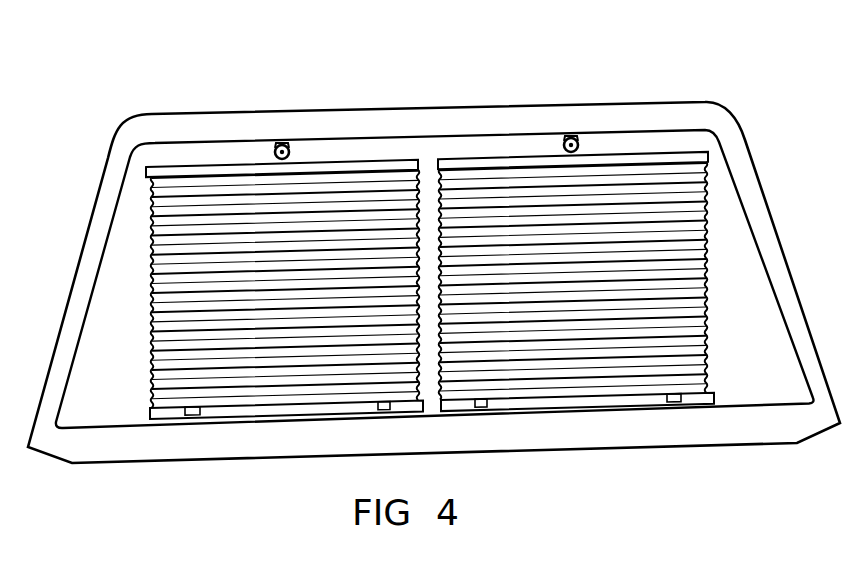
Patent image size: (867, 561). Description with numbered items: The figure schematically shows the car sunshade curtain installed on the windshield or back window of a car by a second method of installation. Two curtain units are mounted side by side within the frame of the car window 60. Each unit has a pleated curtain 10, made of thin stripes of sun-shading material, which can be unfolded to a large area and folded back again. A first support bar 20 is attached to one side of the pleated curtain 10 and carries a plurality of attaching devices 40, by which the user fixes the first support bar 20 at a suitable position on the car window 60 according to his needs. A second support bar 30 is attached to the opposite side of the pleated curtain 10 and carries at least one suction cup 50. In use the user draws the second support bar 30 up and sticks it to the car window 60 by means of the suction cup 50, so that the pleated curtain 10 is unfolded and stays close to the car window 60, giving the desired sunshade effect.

The pleated curtain 10 is at (690, 315).
The first support bar 20 is at (575, 402).
The second support bar 30 is at (612, 160).
The attaching devices 40 is at (482, 410).
The suction cup 50 is at (573, 137).
The car window 60 is at (728, 222).